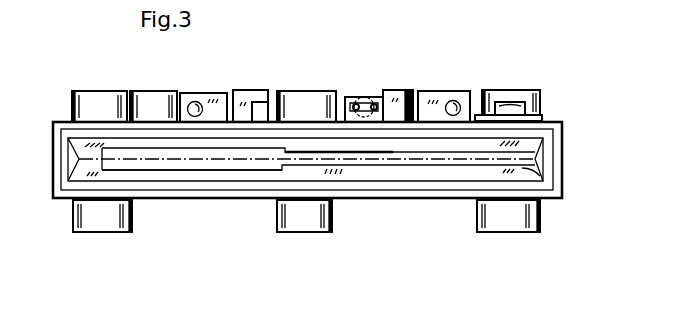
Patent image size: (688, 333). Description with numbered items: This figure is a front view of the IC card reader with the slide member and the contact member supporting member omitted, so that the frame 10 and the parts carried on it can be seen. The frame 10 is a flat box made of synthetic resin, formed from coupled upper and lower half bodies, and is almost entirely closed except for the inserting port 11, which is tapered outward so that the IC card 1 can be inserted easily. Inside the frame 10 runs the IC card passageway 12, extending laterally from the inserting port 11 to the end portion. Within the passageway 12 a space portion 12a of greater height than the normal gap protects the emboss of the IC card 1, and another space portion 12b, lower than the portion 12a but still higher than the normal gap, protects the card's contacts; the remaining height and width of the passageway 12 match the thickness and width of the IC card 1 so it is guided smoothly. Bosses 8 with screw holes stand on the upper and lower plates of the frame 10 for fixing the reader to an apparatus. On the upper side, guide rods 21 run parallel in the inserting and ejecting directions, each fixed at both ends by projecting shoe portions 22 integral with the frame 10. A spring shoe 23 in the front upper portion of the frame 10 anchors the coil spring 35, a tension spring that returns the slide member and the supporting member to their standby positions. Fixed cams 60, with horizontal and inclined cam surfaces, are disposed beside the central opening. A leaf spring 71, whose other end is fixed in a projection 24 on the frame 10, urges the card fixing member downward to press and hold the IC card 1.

The IC card 1 is at (168, 163).
The bosses 8 is at (100, 96).
The frame 10 is at (57, 156).
The inserting port 11 is at (561, 191).
The IC card passageway 12 is at (405, 157).
The space portion 12a is at (226, 170).
The space portion 12b is at (318, 158).
The guide rods 21 is at (198, 100).
The projecting shoe portions 22 is at (222, 93).
The spring shoe 23 is at (389, 92).
The projection 24 is at (542, 117).
The coil spring 35 is at (360, 100).
The fixed cams 60 is at (268, 90).
The leaf spring 71 is at (528, 104).